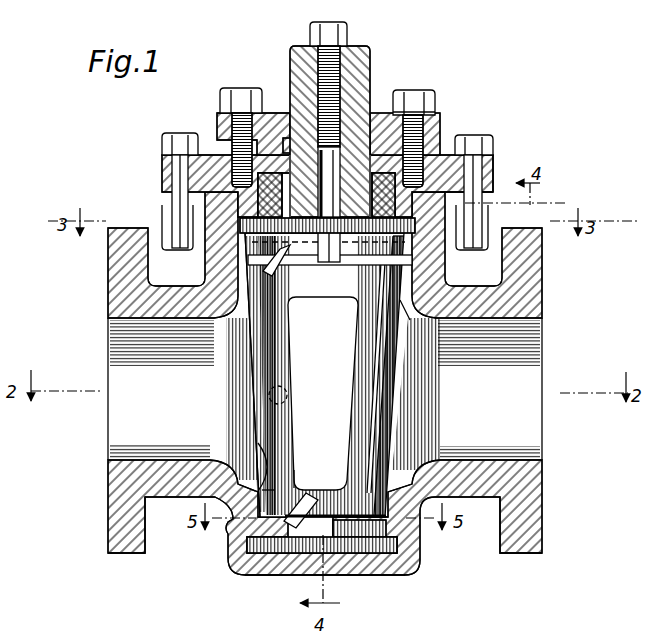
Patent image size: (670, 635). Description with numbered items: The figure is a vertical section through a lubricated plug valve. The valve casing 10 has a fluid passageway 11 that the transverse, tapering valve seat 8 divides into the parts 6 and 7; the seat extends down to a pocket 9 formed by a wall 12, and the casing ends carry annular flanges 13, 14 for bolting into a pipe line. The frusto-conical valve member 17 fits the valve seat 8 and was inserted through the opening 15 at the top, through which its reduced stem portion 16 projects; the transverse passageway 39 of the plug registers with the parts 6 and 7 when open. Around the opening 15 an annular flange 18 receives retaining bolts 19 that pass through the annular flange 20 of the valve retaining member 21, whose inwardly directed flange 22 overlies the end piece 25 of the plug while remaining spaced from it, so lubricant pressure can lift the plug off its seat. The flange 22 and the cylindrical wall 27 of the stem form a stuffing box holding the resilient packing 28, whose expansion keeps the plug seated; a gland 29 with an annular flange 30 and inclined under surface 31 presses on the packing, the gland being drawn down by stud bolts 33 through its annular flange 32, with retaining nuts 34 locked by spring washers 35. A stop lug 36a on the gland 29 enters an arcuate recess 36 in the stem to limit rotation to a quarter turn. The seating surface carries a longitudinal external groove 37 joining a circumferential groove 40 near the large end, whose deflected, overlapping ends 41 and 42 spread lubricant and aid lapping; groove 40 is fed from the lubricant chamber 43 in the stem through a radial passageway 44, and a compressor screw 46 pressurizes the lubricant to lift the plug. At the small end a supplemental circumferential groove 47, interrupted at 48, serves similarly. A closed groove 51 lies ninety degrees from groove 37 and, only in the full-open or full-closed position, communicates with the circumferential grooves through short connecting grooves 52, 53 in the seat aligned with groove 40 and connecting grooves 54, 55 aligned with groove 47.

The passageway part 6 is at (117, 367).
The passageway part 7 is at (540, 370).
The valve seat 8 is at (260, 470).
The pocket 9 is at (253, 557).
The valve casing 10 is at (447, 278).
The fluid passageway 11 is at (197, 410).
The wall 12 is at (388, 572).
The annular flange 13 is at (120, 550).
The annular flange 14 is at (513, 555).
The opening 15 is at (200, 195).
The reduced stem portion 16 is at (373, 112).
The valve member 17 is at (398, 380).
The annular flange 18 is at (470, 198).
The retaining bolts 19 is at (178, 160).
The annular flange 20 is at (460, 137).
The valve retaining member 21 is at (420, 158).
The annular inwardly directed flange 22 is at (346, 267).
The end piece 25 is at (322, 268).
The cylindrical wall 27 is at (505, 202).
The packing 28 is at (268, 112).
The gland 29 is at (416, 91).
The annular flange 30 is at (177, 157).
The inclined under surface 31 is at (226, 150).
The annular flange 32 is at (218, 114).
The stud bolts 33 is at (238, 88).
The retaining nuts 34 is at (398, 108).
The spring washers 35 is at (258, 112).
The arcuate recess 36 is at (312, 160).
The stop lug 36a is at (282, 137).
The longitudinal external groove 37 is at (272, 413).
The transverse passageway 39 is at (358, 358).
The circumferential groove 40 is at (255, 298).
The deflected terminal point 41 is at (245, 336).
The deflected terminal point 42 is at (323, 393).
The lubricant chamber 43 is at (340, 162).
The radial passageway 44 is at (242, 252).
The compressor screw 46 is at (345, 30).
The supplemental circumferential groove 47 is at (284, 524).
The interruption 48 is at (296, 514).
The closed groove 51 is at (370, 450).
The connecting groove 52 is at (238, 232).
The connecting groove 53 is at (402, 312).
The connecting groove 54 is at (291, 474).
The connecting groove 55 is at (362, 545).